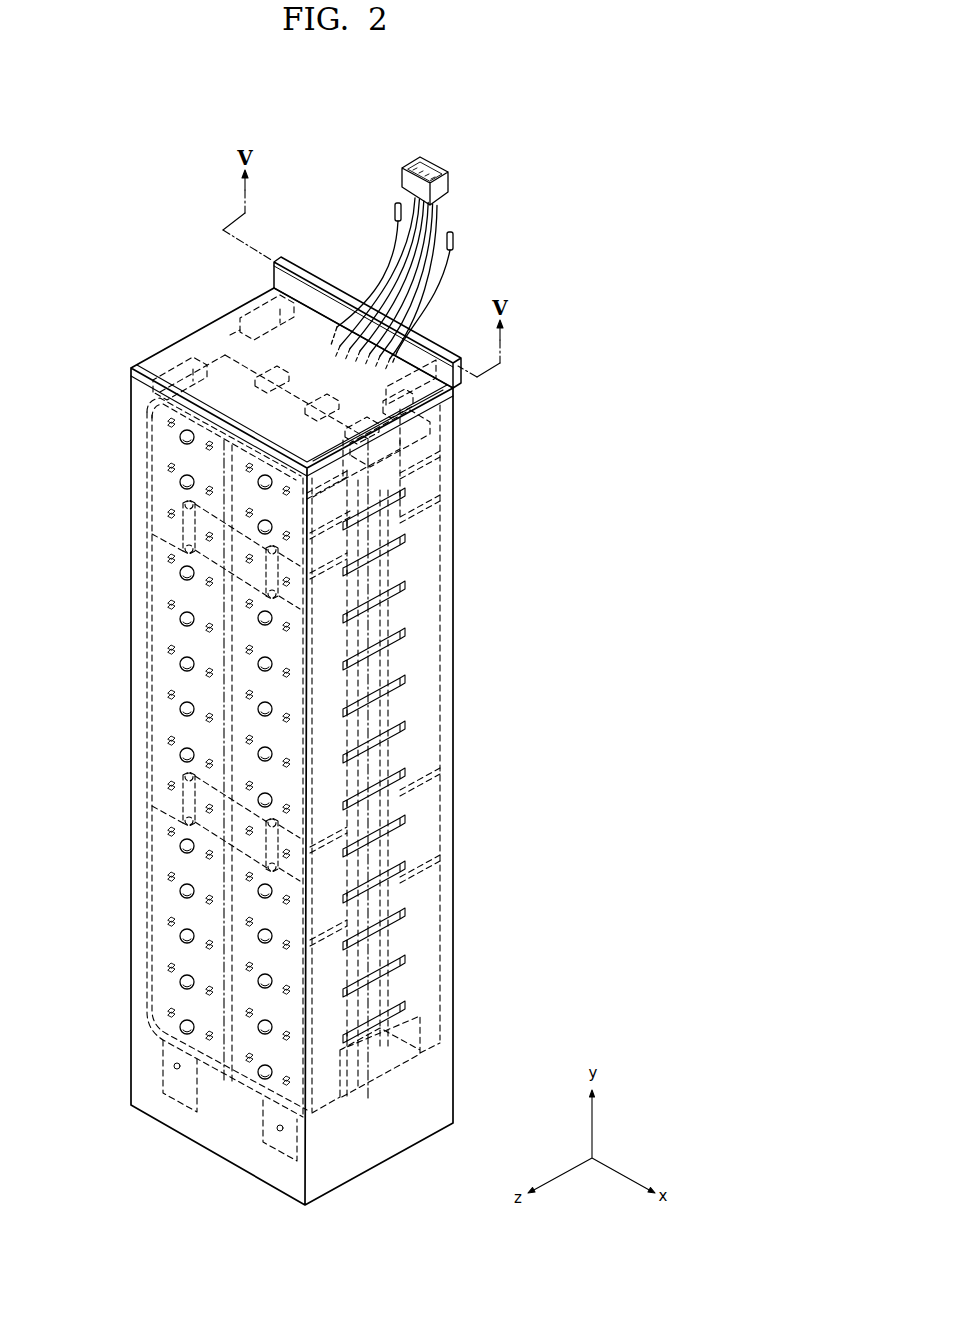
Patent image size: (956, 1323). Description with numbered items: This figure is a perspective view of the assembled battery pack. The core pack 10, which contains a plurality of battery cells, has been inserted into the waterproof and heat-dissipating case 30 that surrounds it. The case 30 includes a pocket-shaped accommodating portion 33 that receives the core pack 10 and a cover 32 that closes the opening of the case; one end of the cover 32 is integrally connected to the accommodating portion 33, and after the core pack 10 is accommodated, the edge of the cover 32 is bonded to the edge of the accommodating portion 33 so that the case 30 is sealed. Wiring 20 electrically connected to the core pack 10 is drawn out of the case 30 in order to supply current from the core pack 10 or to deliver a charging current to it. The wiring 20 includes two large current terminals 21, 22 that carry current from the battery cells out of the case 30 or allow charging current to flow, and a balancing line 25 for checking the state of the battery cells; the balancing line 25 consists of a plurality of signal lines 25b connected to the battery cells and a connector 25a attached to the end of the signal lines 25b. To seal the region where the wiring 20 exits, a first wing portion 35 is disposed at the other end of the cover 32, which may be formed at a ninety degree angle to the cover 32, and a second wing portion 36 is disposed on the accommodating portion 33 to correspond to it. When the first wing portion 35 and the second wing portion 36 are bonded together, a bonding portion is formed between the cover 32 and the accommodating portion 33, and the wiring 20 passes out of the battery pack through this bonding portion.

The core pack 10 is at (167, 495).
The wiring 20 is at (385, 78).
The large current terminal 21 is at (397, 203).
The large current terminal 22 is at (453, 233).
The balancing line 25 is at (432, 114).
The connector 25a is at (432, 166).
The signal lines 25b is at (443, 215).
The waterproof and heat-dissipating case 30 is at (463, 585).
The cover 32 is at (201, 342).
The accommodating portion 33 is at (420, 664).
The first wing portion 35 is at (277, 278).
The second wing portion 36 is at (283, 262).